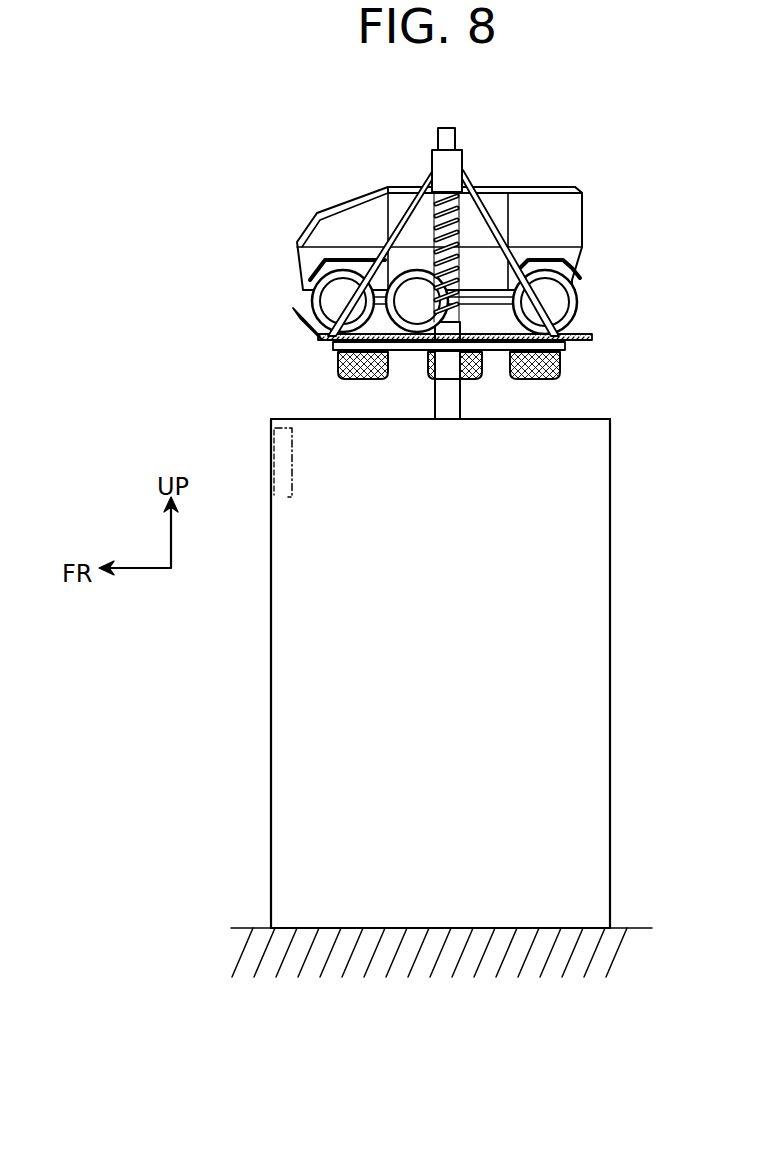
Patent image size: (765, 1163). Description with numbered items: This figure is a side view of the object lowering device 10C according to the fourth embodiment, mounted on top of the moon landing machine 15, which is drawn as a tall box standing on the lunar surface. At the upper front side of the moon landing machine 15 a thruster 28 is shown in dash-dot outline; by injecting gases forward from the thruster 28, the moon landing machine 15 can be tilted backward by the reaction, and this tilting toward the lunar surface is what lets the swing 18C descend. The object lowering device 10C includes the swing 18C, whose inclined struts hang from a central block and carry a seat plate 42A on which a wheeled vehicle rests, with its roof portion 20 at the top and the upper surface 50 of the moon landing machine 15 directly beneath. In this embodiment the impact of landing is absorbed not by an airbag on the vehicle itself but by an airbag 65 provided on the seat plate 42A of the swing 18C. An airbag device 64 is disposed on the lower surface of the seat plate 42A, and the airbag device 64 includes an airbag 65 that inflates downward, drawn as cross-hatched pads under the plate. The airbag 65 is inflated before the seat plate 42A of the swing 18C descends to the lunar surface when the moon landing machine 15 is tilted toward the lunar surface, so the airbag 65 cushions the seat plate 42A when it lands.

The object lowering device 10C is at (278, 204).
The roof portion 20 is at (537, 187).
The swing 18C is at (612, 244).
The seat plate 42A is at (585, 333).
The airbag device 64 is at (567, 347).
The airbag 65 is at (358, 380).
The upper surface 50 is at (298, 418).
The thruster 28 is at (280, 500).
The moon landing machine 15 is at (611, 633).